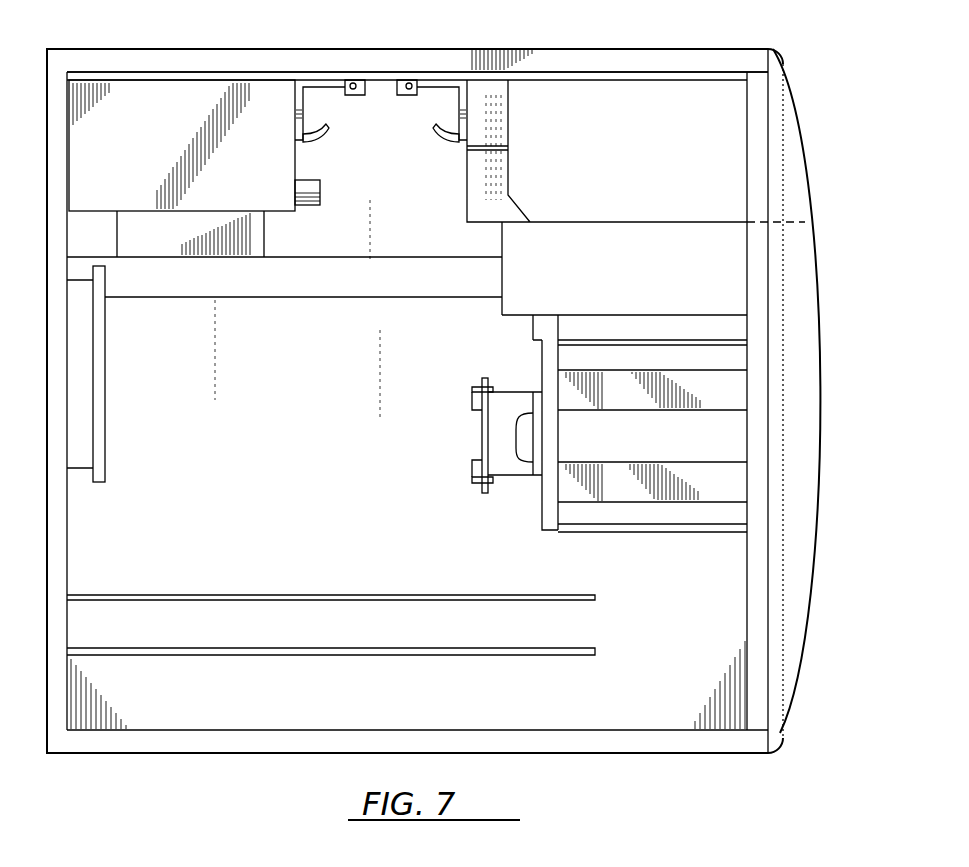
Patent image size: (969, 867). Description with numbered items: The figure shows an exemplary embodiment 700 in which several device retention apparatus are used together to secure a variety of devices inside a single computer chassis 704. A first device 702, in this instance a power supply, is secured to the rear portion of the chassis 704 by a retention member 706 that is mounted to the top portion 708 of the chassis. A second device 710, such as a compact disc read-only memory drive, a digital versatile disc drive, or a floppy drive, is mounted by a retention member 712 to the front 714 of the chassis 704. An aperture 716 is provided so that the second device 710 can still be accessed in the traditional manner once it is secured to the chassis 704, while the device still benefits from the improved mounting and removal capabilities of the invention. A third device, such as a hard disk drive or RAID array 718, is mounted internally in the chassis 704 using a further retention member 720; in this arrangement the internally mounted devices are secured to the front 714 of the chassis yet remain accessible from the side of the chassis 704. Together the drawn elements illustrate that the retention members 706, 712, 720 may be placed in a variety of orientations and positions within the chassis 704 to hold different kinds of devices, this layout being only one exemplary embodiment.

The exemplary embodiment 700 is at (772, 760).
The first device 702 is at (157, 175).
The chassis 704 is at (252, 46).
The retention member 706 is at (327, 82).
The top portion 708 is at (607, 60).
The second device 710 is at (668, 160).
The retention member 712 is at (436, 82).
The front 714 is at (748, 100).
The aperture 716 is at (803, 137).
The RAID array 718 is at (672, 450).
The retention member 720 is at (483, 432).